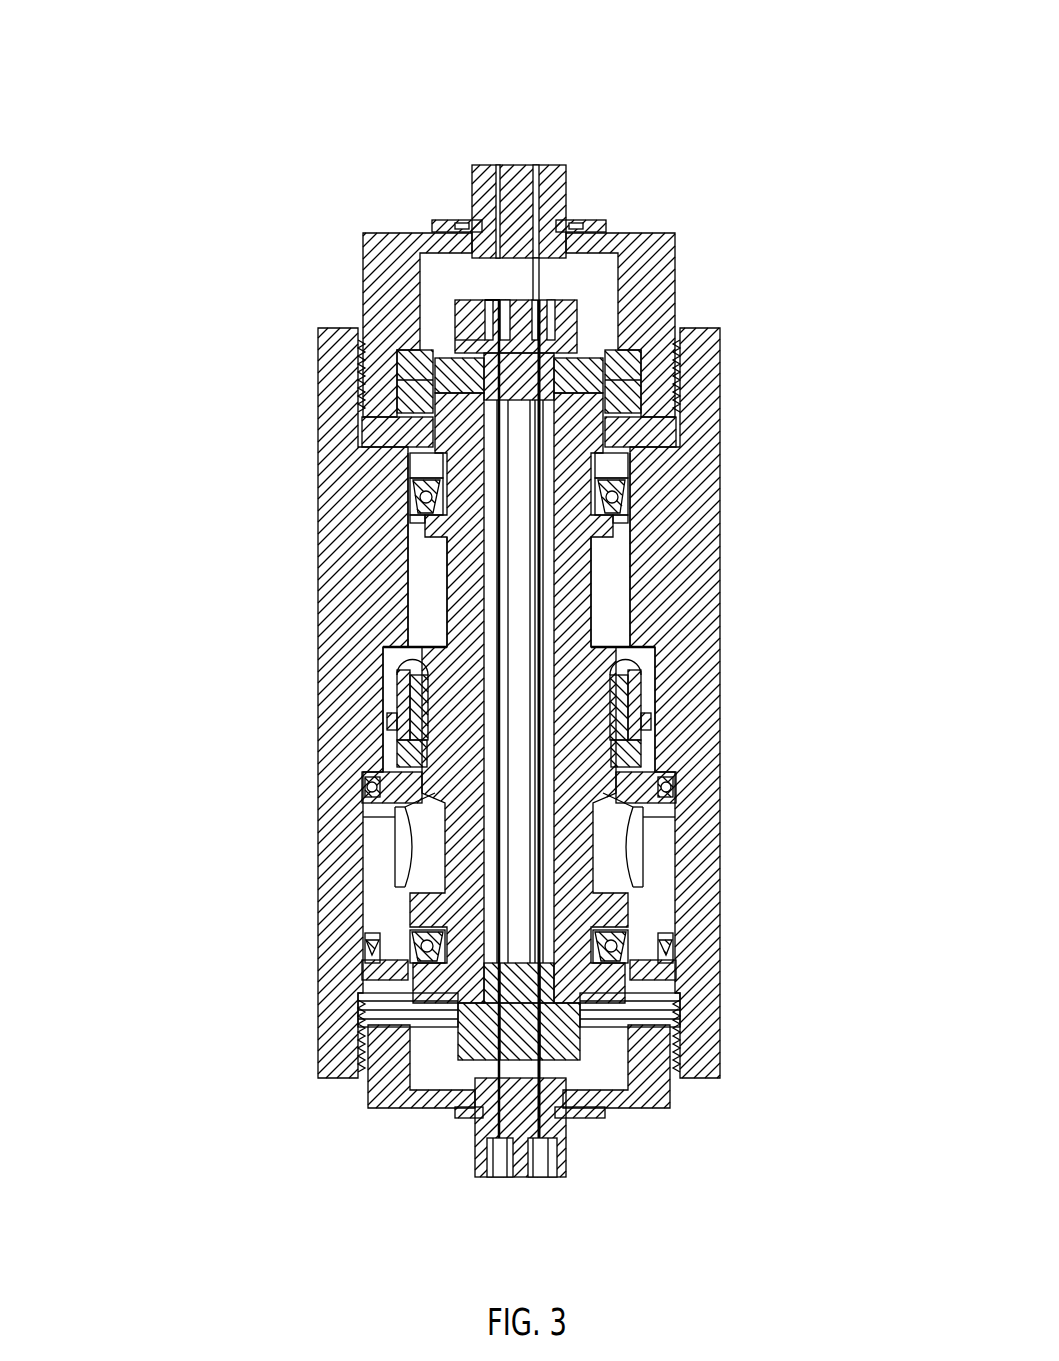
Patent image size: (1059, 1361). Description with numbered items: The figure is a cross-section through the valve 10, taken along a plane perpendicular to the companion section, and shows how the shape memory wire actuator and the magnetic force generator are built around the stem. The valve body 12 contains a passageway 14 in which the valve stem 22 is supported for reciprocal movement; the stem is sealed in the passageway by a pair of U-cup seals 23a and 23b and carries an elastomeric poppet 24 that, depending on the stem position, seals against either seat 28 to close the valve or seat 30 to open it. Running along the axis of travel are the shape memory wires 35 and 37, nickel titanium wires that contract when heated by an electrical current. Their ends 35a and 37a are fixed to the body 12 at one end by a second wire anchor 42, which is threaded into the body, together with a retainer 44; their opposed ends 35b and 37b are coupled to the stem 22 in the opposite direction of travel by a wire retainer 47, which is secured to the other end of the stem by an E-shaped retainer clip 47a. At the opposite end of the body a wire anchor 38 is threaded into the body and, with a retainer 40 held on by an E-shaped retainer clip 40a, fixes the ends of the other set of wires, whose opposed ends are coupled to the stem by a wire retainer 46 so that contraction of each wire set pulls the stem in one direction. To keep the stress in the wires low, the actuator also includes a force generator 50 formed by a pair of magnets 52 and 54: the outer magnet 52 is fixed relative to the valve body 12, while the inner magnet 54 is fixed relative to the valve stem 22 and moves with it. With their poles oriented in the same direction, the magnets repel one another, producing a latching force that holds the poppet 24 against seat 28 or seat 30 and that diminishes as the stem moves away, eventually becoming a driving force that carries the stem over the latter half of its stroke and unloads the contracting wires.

The valve 10 is at (452, 615).
The valve body 12 is at (705, 392).
The passageway 14 is at (413, 560).
The valve stem 22 is at (432, 622).
The U-cup seal 23a is at (403, 498).
The U-cup seal 23b is at (410, 947).
The poppet 24 is at (383, 742).
The seat 28 is at (647, 657).
The seat 30 is at (595, 808).
The shape memory wire 35 is at (507, 573).
The wire end 35a is at (500, 1153).
The wire end 35b is at (493, 297).
The shape memory wire 37 is at (540, 574).
The wire end 37a is at (548, 1163).
The wire end 37b is at (600, 222).
The wire anchor 38 is at (672, 220).
The retainer 40 is at (519, 165).
The retainer clip 40a is at (598, 220).
The second wire anchor 42 is at (368, 1112).
The retainer 44 is at (539, 1153).
The wire retainer 46 is at (673, 1031).
The wire retainer 47 is at (450, 317).
The retainer clip 47a is at (437, 343).
The force generator 50 is at (390, 402).
The magnet 52 is at (625, 350).
The magnet 54 is at (585, 368).